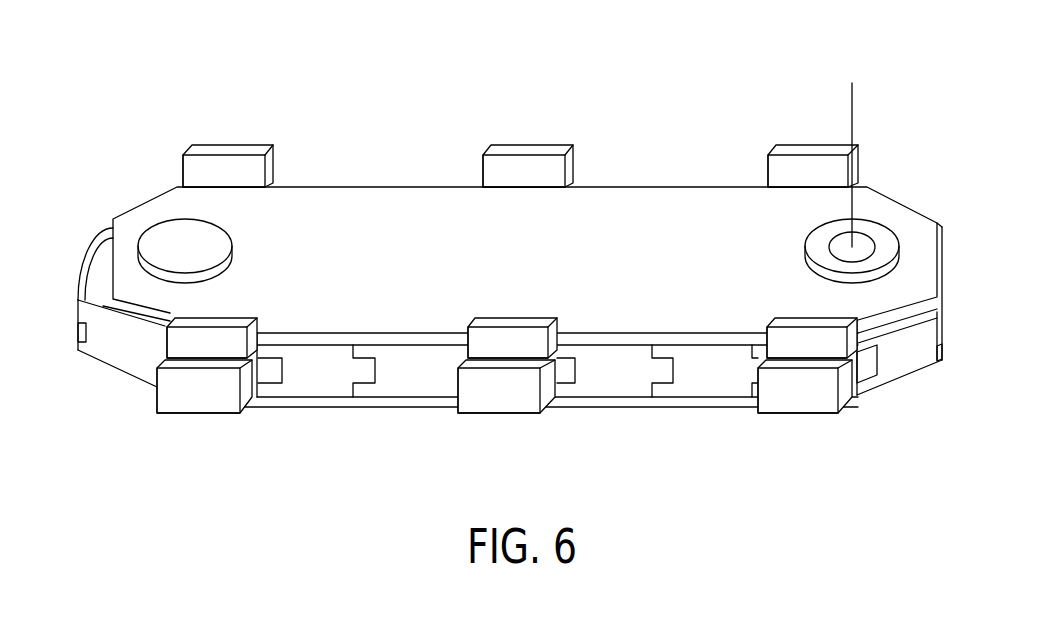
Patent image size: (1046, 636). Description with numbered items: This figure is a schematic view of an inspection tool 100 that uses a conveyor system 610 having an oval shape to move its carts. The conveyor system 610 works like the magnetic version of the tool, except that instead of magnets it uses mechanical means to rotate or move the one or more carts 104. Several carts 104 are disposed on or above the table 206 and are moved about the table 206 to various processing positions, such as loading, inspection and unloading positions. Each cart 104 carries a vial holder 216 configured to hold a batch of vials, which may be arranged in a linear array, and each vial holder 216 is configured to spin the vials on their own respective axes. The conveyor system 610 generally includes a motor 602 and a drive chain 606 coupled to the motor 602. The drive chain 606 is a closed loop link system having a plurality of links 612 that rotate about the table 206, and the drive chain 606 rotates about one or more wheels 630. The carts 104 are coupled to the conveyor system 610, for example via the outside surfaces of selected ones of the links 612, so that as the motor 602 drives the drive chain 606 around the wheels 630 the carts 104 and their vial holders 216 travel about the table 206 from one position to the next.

The inspection tool 100 is at (496, 266).
The carts 104 is at (146, 432).
The table 206 is at (360, 200).
The vial holder 216 is at (245, 152).
The motor 602 is at (853, 103).
The drive chain 606 is at (903, 358).
The conveyor system 610 is at (97, 385).
The links 612 is at (335, 378).
The wheels 630 is at (103, 263).